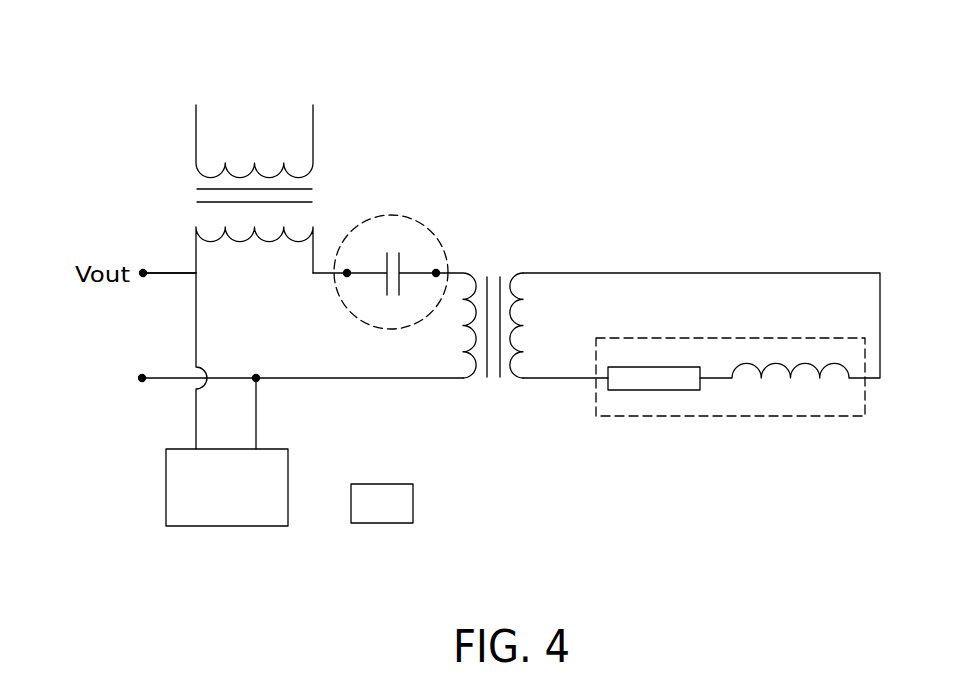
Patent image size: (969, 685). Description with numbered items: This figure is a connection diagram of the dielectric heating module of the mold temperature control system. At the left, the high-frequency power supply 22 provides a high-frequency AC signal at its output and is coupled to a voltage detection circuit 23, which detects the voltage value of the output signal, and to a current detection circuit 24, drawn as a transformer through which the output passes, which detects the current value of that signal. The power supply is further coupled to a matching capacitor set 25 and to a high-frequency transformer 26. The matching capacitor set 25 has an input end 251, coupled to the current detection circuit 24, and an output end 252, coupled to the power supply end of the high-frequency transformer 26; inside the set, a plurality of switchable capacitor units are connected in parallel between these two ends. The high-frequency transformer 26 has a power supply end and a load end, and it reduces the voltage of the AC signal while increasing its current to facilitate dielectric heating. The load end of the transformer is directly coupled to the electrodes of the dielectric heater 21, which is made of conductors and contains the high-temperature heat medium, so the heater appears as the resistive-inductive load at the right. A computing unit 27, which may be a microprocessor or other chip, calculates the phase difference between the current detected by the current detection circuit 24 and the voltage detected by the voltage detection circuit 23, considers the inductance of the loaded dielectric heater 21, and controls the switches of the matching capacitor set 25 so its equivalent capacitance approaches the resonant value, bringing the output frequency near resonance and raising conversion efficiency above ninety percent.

The dielectric heater 21 is at (762, 417).
The high-frequency power supply 22 is at (103, 250).
The voltage detection circuit 23 is at (222, 528).
The current detection circuit 24 is at (278, 97).
The matching capacitor set 25 is at (418, 218).
The input end 251 is at (347, 270).
The output end 252 is at (438, 270).
The high-frequency transformer 26 is at (490, 392).
The computing unit 27 is at (413, 500).